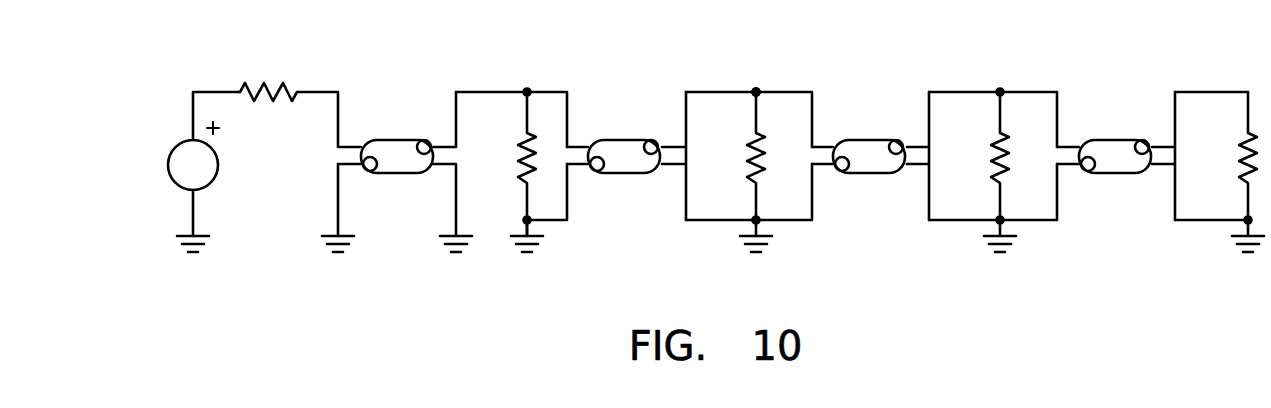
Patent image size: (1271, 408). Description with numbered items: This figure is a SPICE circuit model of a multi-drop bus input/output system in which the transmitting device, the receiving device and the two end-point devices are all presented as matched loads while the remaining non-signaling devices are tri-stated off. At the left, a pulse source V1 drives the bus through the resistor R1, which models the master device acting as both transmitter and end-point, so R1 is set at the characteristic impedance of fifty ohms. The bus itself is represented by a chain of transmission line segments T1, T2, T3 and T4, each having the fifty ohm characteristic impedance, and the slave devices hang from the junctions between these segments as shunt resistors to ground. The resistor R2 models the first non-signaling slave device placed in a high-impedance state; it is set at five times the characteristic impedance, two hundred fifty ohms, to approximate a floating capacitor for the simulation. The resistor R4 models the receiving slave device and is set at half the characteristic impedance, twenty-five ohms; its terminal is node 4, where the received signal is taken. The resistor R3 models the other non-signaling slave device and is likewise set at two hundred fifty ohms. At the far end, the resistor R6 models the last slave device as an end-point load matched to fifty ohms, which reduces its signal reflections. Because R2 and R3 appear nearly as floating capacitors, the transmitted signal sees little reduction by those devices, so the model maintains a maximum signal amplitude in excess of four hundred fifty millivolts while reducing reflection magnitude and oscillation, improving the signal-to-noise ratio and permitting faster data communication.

The node 4 is at (756, 92).
The pulse voltage source V1 is at (164, 172).
The resistor R1 is at (300, 87).
The transmission line Z0=50 T1 is at (397, 166).
The resistor R2 is at (511, 171).
The transmission line Z0=50 T2 is at (626, 150).
The resistor R4 is at (749, 171).
The transmission line Z0=50 T3 is at (870, 150).
The resistor R3 is at (993, 171).
The transmission line Z0=50 T4 is at (1116, 150).
The resistor R6 is at (1219, 172).